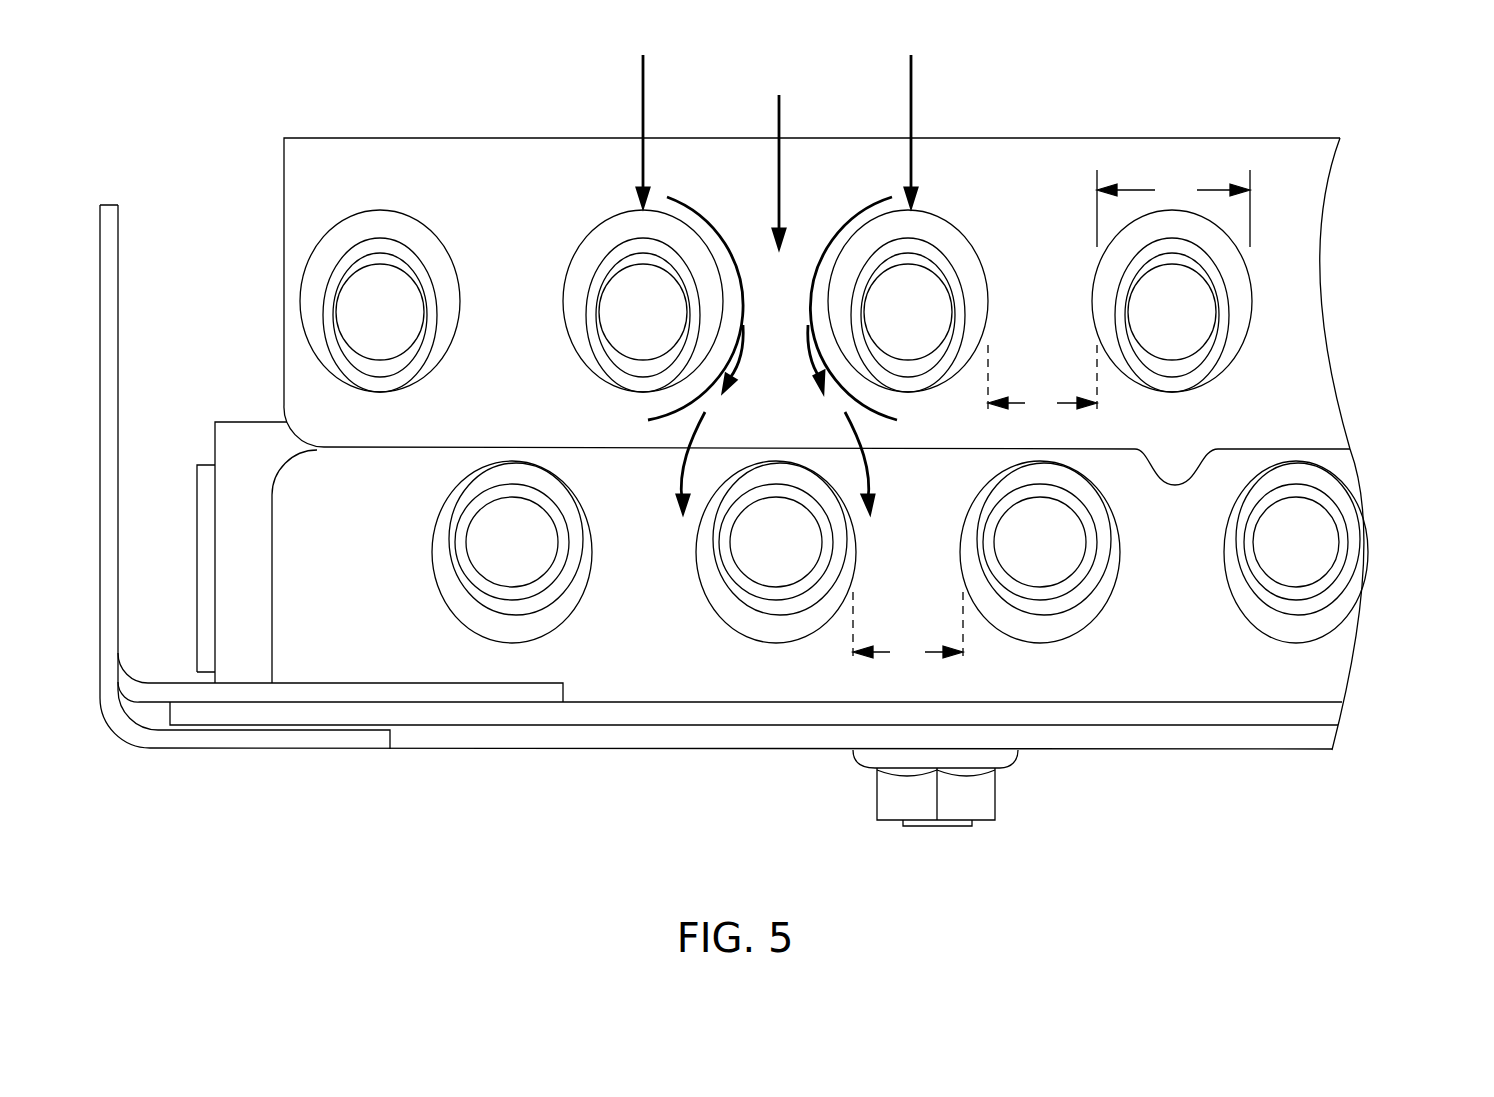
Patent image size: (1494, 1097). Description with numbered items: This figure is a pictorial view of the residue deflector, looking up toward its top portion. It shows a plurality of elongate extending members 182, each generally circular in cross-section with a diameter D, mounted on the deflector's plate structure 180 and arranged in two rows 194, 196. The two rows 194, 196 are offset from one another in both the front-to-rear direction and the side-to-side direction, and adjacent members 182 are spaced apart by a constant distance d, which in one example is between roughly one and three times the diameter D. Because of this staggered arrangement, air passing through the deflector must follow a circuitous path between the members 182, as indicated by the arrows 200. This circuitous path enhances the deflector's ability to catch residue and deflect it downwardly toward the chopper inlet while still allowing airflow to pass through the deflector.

The spring retainer plate 180 is at (310, 195).
The extending members 182 is at (390, 300).
The first row 194 is at (1335, 245).
The second row 196 is at (1385, 544).
The airflow arrows 200 is at (779, 137).